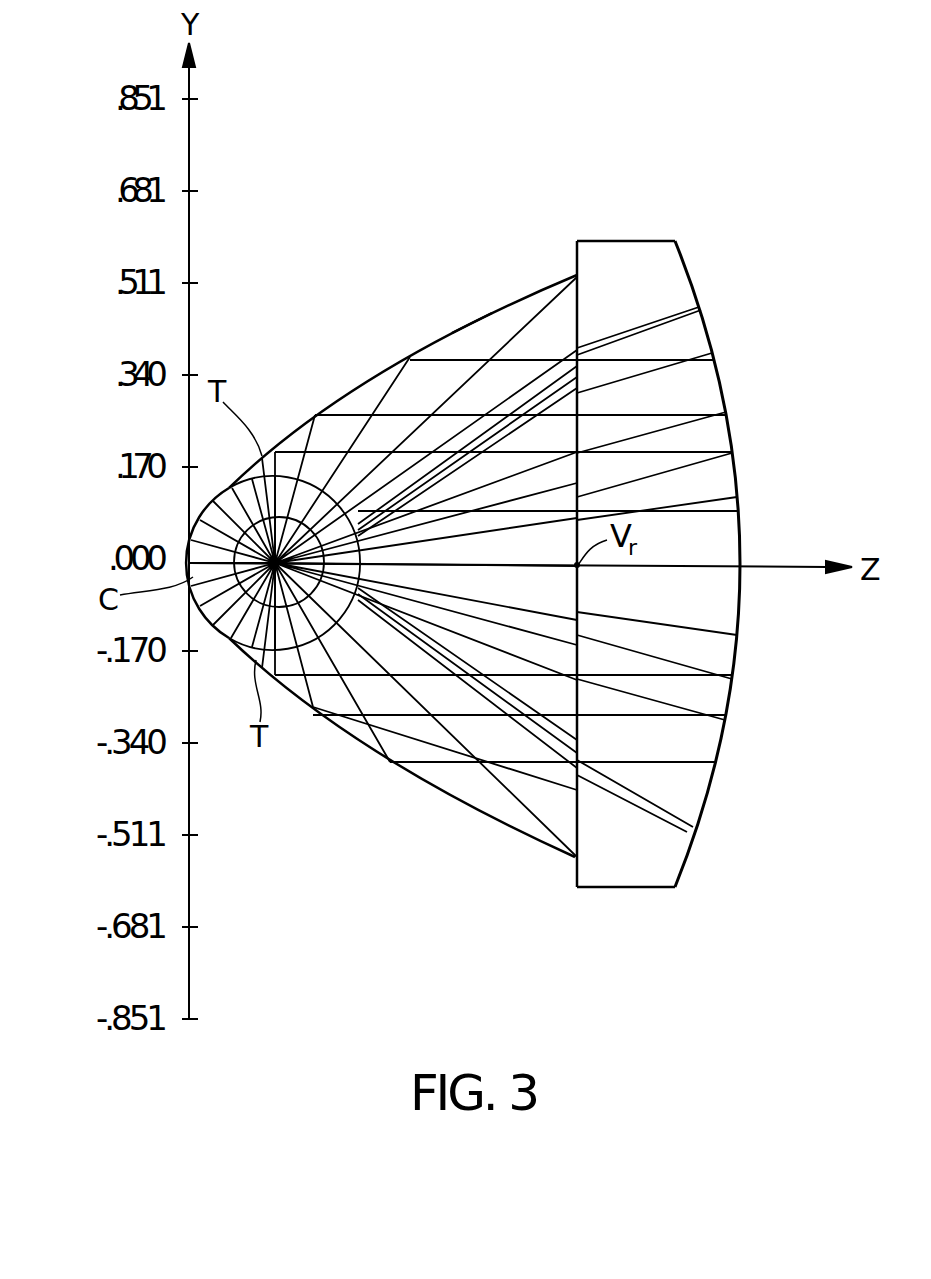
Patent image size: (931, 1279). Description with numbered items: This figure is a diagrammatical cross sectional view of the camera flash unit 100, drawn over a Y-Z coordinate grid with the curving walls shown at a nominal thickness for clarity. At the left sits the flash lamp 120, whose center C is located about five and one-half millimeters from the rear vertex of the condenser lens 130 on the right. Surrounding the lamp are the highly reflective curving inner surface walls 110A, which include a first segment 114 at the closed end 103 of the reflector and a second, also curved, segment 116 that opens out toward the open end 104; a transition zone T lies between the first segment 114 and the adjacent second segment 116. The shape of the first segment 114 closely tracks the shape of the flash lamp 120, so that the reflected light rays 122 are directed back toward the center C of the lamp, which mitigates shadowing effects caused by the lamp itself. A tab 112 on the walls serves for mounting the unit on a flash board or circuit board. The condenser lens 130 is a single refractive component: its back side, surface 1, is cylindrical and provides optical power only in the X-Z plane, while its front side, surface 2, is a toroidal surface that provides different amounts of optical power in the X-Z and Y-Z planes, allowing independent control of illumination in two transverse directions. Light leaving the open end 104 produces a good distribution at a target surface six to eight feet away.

The camera flash unit 100 is at (427, 206).
The open end 104 is at (574, 309).
The reflective inner surface walls 110A is at (470, 334).
The second segment 116 is at (414, 360).
The tab 112 is at (282, 460).
The first segment 114 is at (210, 645).
The flash lamp 120 is at (230, 633).
The reflected light rays 122 is at (197, 513).
The closed end 103 is at (193, 612).
The condenser lens 130 is at (667, 860).
The surface 1 is at (575, 538).
The surface 2 is at (744, 514).